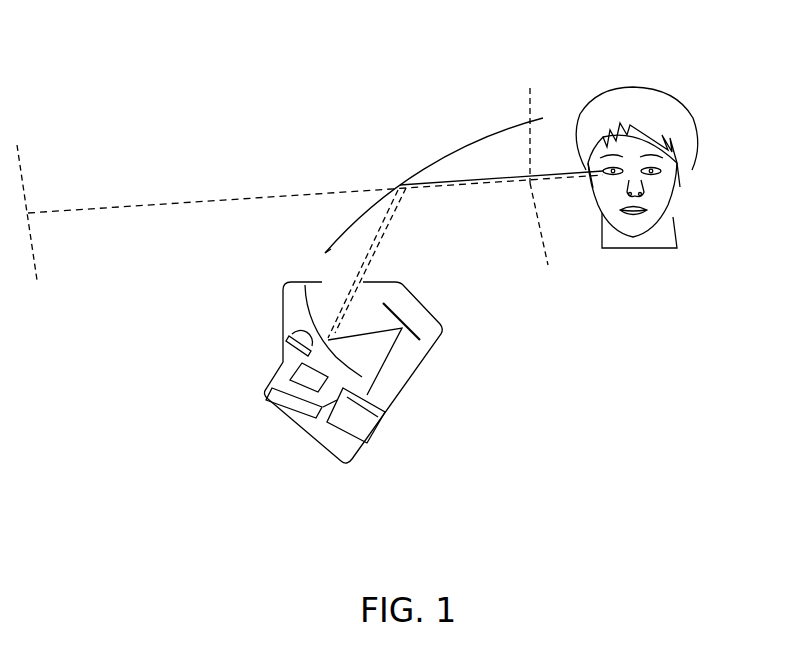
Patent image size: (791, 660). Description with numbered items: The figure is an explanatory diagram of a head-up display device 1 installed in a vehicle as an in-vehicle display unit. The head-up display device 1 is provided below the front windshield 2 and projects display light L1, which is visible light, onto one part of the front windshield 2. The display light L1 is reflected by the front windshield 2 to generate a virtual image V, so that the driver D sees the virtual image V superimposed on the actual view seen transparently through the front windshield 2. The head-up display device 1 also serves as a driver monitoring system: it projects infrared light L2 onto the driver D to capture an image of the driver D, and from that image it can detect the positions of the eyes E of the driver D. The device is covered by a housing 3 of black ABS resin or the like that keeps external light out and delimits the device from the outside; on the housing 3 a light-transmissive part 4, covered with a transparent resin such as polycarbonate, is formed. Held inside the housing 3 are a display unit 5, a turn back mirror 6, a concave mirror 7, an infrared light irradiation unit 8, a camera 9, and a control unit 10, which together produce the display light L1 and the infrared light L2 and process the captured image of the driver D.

The head-up display device 1 is at (433, 295).
The front windshield 2 is at (460, 147).
The housing 3 is at (417, 388).
The light-transmissive part 4 is at (333, 283).
The display unit 5 is at (373, 433).
The turn back mirror 6 is at (432, 326).
The concave mirror 7 is at (313, 275).
The infrared light irradiation unit 8 is at (288, 330).
The camera 9 is at (290, 370).
The control unit 10 is at (278, 397).
The virtual image V is at (18, 158).
The driver D is at (684, 97).
The eyes E is at (603, 177).
The display light L1 is at (528, 123).
The infrared light L2 is at (548, 237).